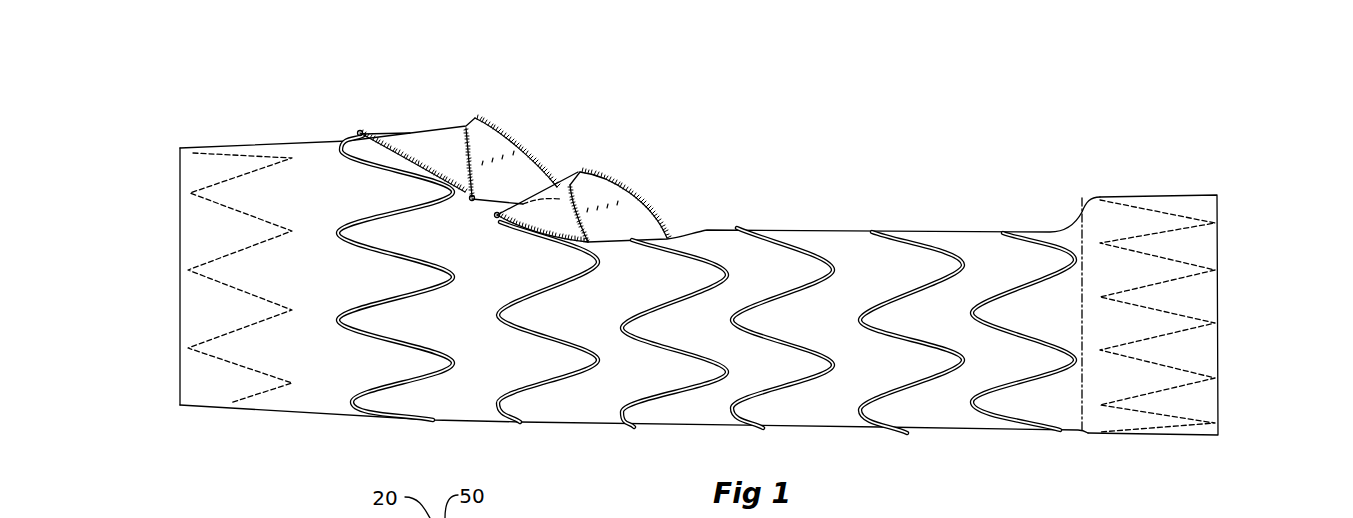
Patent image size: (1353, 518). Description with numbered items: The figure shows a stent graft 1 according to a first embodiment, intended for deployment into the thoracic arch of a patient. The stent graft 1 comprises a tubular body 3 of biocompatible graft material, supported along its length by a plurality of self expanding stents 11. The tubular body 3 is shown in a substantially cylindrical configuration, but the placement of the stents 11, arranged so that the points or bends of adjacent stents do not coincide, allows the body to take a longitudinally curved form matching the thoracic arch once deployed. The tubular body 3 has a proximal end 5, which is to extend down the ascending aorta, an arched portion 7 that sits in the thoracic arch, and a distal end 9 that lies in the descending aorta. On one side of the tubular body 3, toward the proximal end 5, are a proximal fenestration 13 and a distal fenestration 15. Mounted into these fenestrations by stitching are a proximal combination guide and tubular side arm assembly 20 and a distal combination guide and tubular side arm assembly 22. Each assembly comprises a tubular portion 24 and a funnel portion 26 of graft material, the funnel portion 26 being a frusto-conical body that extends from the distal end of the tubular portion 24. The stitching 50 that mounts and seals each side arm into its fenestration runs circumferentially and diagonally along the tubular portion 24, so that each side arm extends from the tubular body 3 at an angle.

The stent graft 1 is at (890, 167).
The tubular body 3 is at (850, 378).
The proximal end 5 is at (178, 253).
The arched portion 7 is at (467, 102).
The distal end 9 is at (1218, 343).
The self expanding stents 11 is at (555, 380).
The proximal fenestration 13 is at (358, 131).
The distal fenestration 15 is at (498, 222).
The proximal combination guide and tubular side arm assembly 20 is at (422, 118).
The distal combination guide and tubular side arm assembly 22 is at (666, 180).
The tubular portion 24 is at (417, 148).
The funnel portion 26 is at (493, 145).
The stitching 50 is at (448, 187).